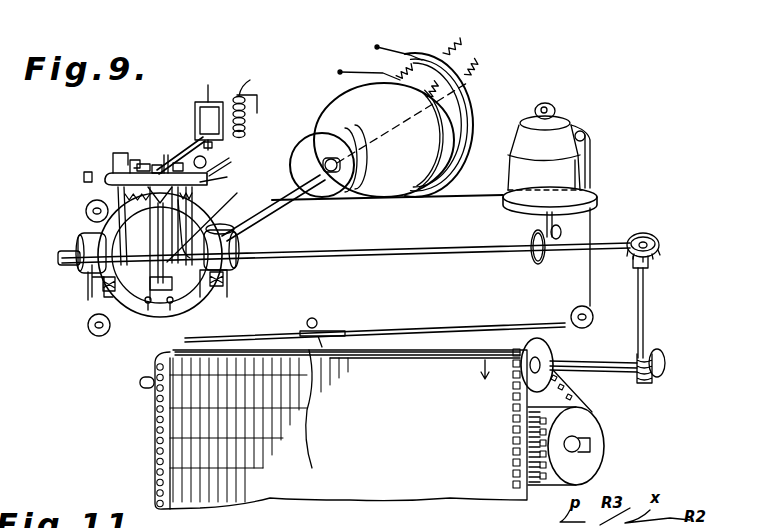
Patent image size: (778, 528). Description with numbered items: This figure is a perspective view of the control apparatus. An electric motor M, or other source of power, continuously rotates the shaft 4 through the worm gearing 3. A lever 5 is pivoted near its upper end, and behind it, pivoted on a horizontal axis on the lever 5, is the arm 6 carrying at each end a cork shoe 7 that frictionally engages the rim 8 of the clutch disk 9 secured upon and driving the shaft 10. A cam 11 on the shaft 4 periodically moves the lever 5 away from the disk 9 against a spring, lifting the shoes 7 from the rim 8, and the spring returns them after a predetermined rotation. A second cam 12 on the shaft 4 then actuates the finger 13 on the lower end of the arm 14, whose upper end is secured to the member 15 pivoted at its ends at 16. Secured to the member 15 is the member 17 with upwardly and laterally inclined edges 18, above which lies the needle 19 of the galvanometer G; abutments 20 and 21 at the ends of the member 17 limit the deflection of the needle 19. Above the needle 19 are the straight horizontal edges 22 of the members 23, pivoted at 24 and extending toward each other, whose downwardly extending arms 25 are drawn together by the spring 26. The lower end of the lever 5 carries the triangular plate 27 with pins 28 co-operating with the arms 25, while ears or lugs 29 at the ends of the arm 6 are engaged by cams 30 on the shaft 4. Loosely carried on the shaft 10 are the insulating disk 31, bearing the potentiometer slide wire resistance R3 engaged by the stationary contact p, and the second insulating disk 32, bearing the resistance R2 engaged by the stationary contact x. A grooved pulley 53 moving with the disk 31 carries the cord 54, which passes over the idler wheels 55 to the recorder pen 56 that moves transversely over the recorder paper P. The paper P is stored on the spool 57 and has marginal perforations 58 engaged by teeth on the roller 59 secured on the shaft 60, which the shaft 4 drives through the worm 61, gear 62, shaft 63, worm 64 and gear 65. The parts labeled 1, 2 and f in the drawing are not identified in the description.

The motor shaft 1 is at (551, 106).
The worm gear 2 is at (561, 233).
The worm gearing 3 is at (536, 260).
The shaft 4 is at (432, 253).
The lever 5 is at (150, 229).
The arm 6 is at (206, 300).
The shoe 7 is at (107, 294).
The rim 8 is at (198, 305).
The clutch disk 9 is at (221, 230).
The shaft 10 is at (276, 201).
The cam 11 is at (150, 254).
The second cam 12 is at (209, 222).
The finger 13 is at (172, 290).
The arm 14 is at (183, 217).
The member 15 is at (196, 191).
The pivot 16 is at (232, 160).
The member 17 is at (166, 155).
The inclined edges 18 is at (157, 165).
The needle 19 is at (190, 134).
The abutment 20 is at (133, 160).
The abutment 21 is at (216, 181).
The edges 22 is at (114, 160).
The members 23 is at (145, 163).
The pivot 24 is at (110, 171).
The arms 25 is at (80, 245).
The spring 26 is at (124, 196).
The triangular plate 27 is at (140, 378).
The pins 28 is at (146, 305).
The ears 29 is at (90, 300).
The cams 30 is at (60, 260).
The disk 31 is at (334, 109).
The second disk 32 is at (469, 129).
The grooved pulley 53 is at (308, 148).
The cord 54 is at (90, 290).
The idler rollers 55 is at (86, 212).
The recorder pen 56 is at (315, 331).
The spool 57 is at (599, 457).
The marginal perforations 58 is at (155, 459).
The roller 59 is at (548, 352).
The shaft 60 is at (610, 362).
The worm 61 is at (651, 236).
The gear 62 is at (650, 264).
The shaft 63 is at (645, 306).
The worm 64 is at (650, 382).
The gear 65 is at (663, 354).
The electric motor M is at (593, 160).
The galvanometer G is at (196, 135).
The spring coil f is at (247, 101).
The stationary contact p is at (343, 69).
The stationary contact x is at (383, 46).
The recorder paper P is at (456, 500).
The resistance R2 is at (474, 113).
The potentiometer slide wire resistance R3 is at (440, 156).